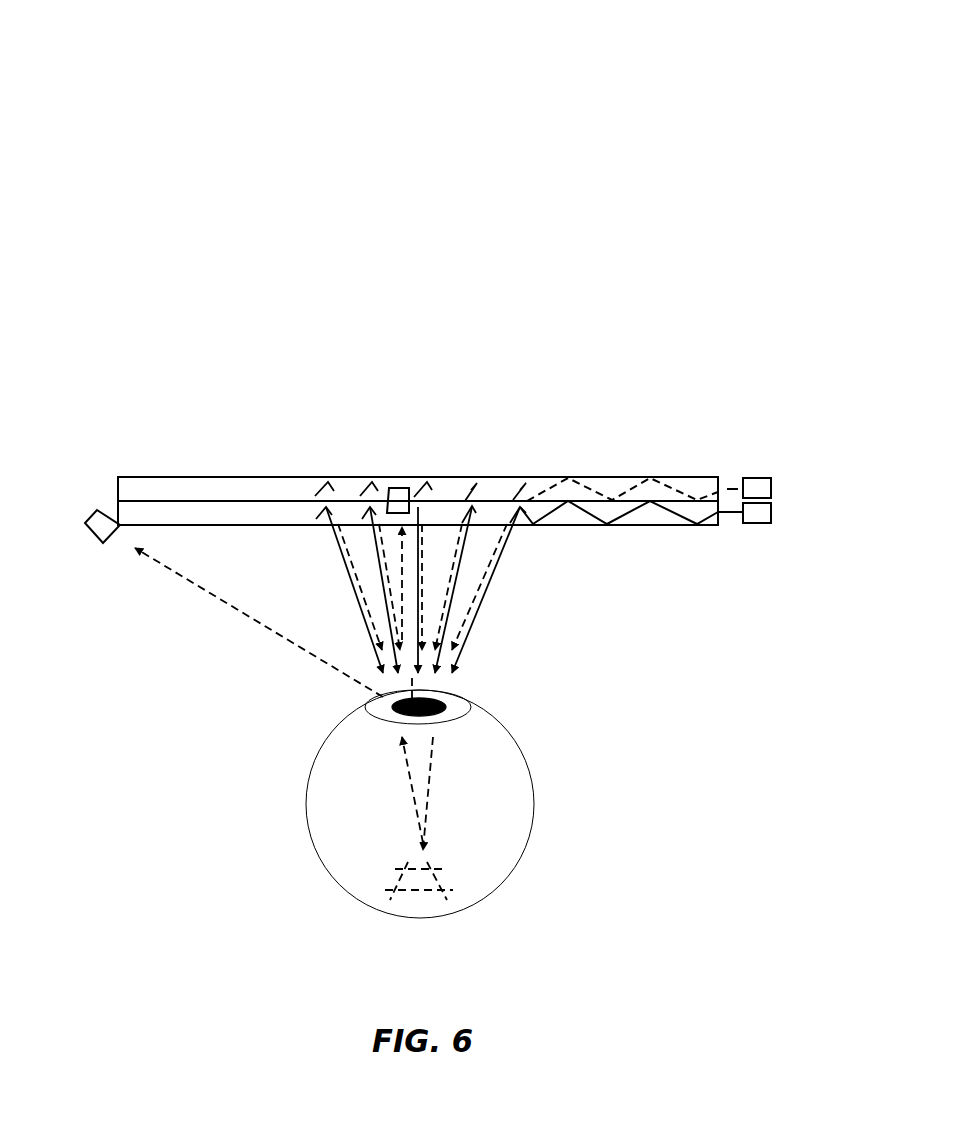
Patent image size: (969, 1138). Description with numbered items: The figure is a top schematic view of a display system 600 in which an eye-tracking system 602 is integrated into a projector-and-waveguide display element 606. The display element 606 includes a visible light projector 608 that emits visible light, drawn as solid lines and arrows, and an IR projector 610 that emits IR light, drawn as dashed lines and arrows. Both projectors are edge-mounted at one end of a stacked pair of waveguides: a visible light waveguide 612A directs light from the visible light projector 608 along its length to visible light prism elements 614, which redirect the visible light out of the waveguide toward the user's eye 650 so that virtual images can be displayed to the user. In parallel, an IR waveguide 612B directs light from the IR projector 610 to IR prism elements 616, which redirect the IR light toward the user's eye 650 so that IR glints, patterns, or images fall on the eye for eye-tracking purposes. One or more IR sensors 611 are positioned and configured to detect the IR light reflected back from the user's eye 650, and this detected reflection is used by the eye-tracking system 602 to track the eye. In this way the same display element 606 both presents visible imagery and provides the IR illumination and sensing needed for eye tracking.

The display system 600 is at (126, 94).
The eye-tracking system 602 is at (697, 378).
The projector-and-waveguide display element 606 is at (240, 394).
The visible light projector 608 is at (757, 527).
The IR projector 610 is at (753, 480).
The IR sensor 611 is at (405, 487).
The visible light waveguide 612A is at (200, 508).
The IR waveguide 612B is at (167, 477).
The visible light prism elements 614 is at (527, 525).
The IR prism elements 616 is at (364, 478).
The user's eye 650 is at (256, 780).